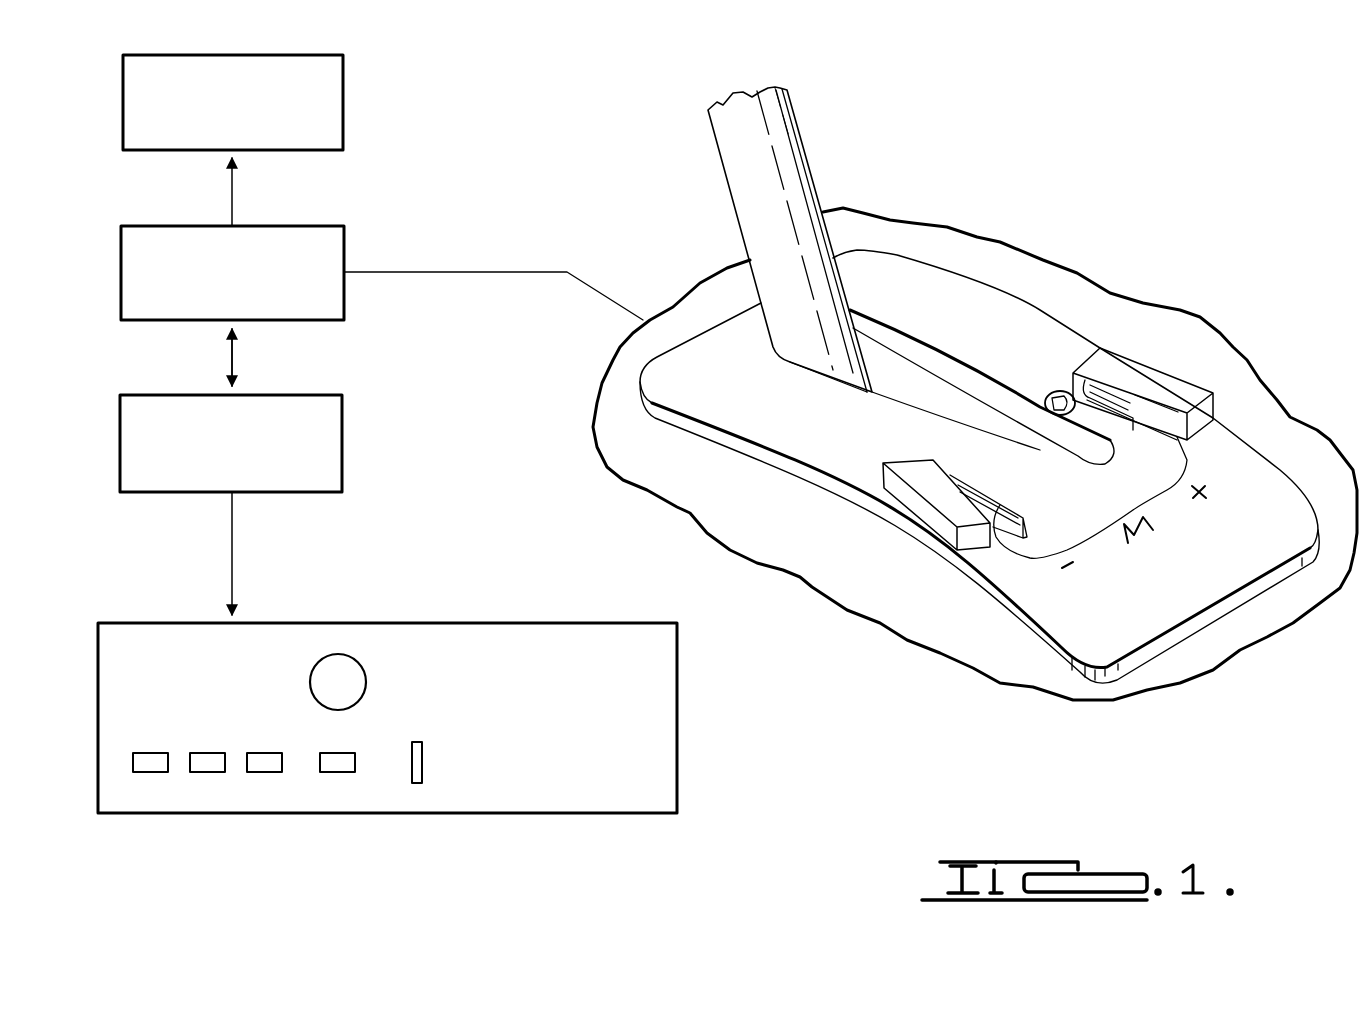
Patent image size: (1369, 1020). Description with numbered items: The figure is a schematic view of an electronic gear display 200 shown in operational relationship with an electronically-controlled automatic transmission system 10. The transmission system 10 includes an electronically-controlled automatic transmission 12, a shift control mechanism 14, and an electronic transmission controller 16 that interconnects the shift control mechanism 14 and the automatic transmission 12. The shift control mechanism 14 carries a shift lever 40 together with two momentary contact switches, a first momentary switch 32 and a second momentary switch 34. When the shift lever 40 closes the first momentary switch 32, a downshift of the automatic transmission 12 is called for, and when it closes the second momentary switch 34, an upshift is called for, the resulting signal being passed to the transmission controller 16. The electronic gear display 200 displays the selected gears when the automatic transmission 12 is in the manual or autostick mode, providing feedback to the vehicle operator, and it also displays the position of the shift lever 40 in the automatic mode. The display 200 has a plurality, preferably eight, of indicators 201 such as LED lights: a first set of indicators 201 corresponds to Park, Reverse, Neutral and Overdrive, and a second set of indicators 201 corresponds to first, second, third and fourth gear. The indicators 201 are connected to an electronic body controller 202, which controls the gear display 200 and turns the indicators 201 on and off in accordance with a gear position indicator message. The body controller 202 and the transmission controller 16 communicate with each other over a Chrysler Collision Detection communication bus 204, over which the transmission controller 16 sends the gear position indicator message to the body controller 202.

The electronically-controlled automatic transmission system 10 is at (1078, 124).
The electronically-controlled automatic transmission 12 is at (343, 72).
The shift control mechanism 14 is at (1113, 293).
The electronic transmission controller 16 is at (344, 236).
The first momentary switch 32 is at (950, 498).
The second momentary switch 34 is at (1167, 387).
The shift lever 40 is at (788, 140).
The electronic gear display 200 is at (570, 622).
The indicators 201 is at (330, 772).
The electronic body controller 202 is at (342, 420).
The communication bus 204 is at (226, 354).